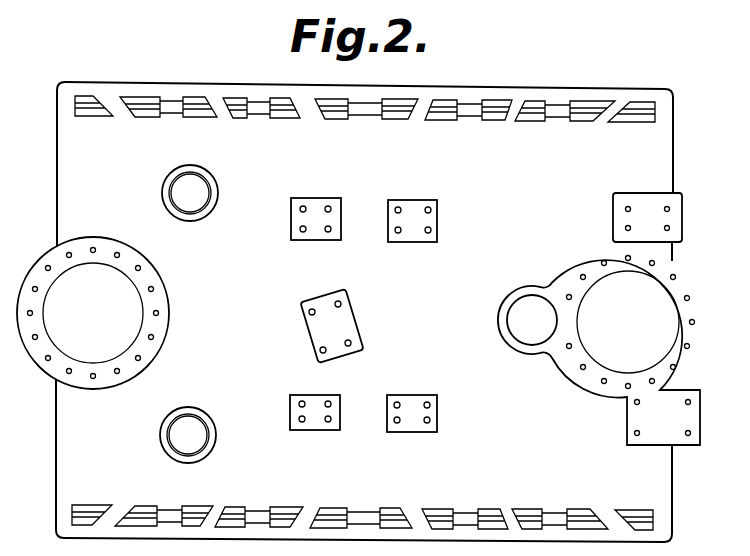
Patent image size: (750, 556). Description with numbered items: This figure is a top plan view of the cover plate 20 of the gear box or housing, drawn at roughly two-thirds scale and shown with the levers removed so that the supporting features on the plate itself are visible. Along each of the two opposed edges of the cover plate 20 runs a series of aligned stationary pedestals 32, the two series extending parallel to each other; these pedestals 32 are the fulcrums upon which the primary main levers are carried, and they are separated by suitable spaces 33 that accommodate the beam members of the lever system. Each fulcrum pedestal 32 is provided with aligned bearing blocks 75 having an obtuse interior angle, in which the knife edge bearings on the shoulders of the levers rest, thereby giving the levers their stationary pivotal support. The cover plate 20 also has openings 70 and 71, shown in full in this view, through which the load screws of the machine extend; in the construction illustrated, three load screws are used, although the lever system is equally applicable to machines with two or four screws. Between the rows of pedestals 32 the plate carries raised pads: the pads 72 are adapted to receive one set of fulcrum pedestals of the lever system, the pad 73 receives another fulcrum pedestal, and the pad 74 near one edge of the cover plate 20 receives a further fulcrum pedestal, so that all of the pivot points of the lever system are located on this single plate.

The cover plate 20 is at (364, 312).
The stationary pedestals 32 is at (82, 98).
The spaces 33 is at (115, 97).
The opening 70 is at (518, 291).
The opening 71 is at (212, 190).
The pads 72 is at (310, 204).
The pad 73 is at (340, 326).
The pad 74 is at (647, 205).
The bearing blocks 75 is at (150, 280).